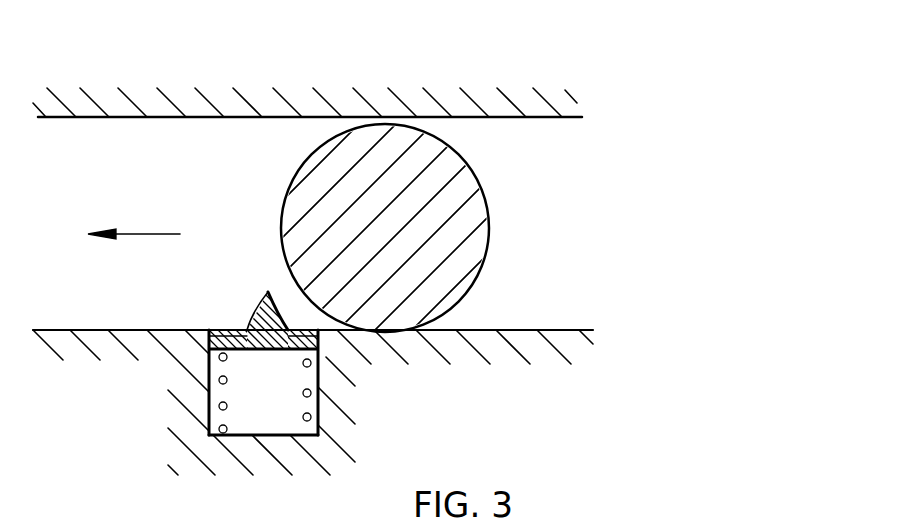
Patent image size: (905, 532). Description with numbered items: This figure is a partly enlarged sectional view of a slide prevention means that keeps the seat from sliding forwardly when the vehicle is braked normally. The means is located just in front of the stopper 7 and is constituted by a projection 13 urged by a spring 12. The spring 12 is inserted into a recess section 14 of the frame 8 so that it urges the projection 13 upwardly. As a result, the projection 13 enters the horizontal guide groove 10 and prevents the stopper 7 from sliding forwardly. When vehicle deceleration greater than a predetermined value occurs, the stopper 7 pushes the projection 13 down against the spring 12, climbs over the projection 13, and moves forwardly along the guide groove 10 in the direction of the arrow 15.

The stopper 7 is at (347, 152).
The frame 8 is at (540, 322).
The horizontal guide groove 10 is at (150, 114).
The spring 12 is at (209, 410).
The projection 13 is at (260, 342).
The recess section 14 is at (265, 436).
The arrow 15 is at (148, 234).